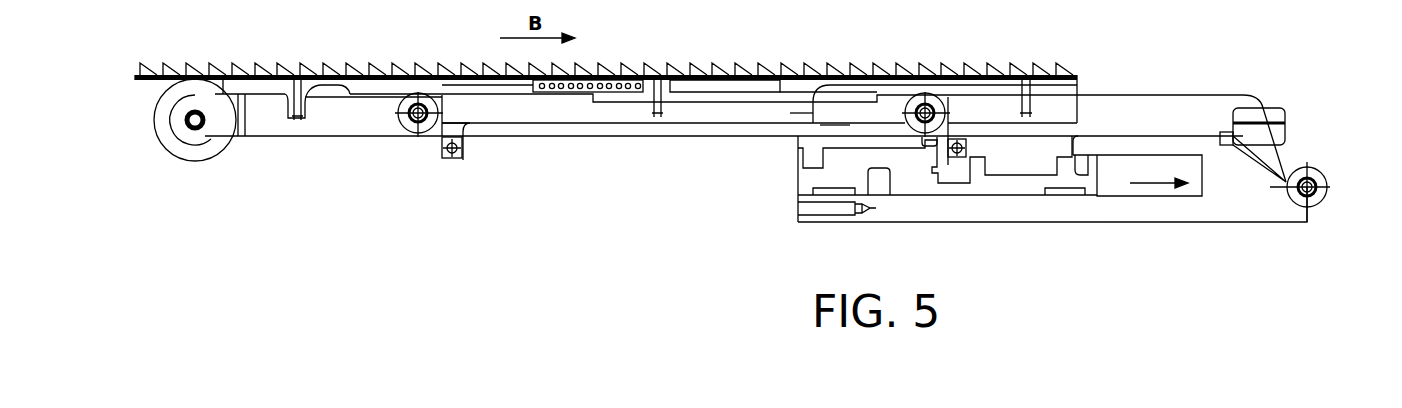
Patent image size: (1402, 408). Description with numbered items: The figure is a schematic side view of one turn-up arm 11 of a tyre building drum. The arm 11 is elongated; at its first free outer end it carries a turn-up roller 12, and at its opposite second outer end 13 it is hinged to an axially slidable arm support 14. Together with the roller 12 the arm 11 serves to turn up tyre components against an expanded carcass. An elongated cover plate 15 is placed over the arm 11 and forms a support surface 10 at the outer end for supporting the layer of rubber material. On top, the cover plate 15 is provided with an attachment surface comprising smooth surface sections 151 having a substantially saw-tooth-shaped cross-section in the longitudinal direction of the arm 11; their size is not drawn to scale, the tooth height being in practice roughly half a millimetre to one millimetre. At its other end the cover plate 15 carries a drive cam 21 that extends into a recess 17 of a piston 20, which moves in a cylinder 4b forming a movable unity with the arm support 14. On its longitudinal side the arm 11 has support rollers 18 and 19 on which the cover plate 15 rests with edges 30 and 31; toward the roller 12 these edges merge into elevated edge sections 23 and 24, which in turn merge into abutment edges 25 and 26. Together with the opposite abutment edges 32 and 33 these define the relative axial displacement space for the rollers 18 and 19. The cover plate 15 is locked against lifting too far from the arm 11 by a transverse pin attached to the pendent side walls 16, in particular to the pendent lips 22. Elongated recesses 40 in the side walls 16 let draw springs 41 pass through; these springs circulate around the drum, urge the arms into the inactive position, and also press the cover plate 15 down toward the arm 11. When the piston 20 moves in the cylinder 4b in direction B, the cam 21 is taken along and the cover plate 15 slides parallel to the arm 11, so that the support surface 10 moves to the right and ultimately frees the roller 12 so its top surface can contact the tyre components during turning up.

The support surface 10 is at (143, 75).
The arm 11 is at (367, 125).
The turn-up roller 12 is at (202, 152).
The second outer end 13 is at (1320, 168).
The arm support 14 is at (1255, 198).
The cover plate 15 is at (397, 77).
The saw-tooth surface sections 151 is at (757, 66).
The pendent side walls 16 is at (608, 113).
The recess 17 is at (930, 172).
The support roller 18 is at (820, 125).
The support roller 19 is at (408, 127).
The piston 20 is at (1022, 183).
The drive cam 21 is at (953, 177).
The pendent lips 22 is at (463, 158).
The elevated edge section 23 is at (838, 81).
The elevated edge section 24 is at (327, 90).
The abutment edge 25 is at (790, 113).
The abutment edge 26 is at (303, 122).
The edge 30 is at (895, 92).
The edge 31 is at (406, 92).
The opposite abutment edge 32 is at (953, 122).
The opposite abutment edge 33 is at (435, 138).
The elongated recess 40 is at (631, 83).
The draw spring 41 is at (573, 86).
The cylinder 4b is at (1183, 210).